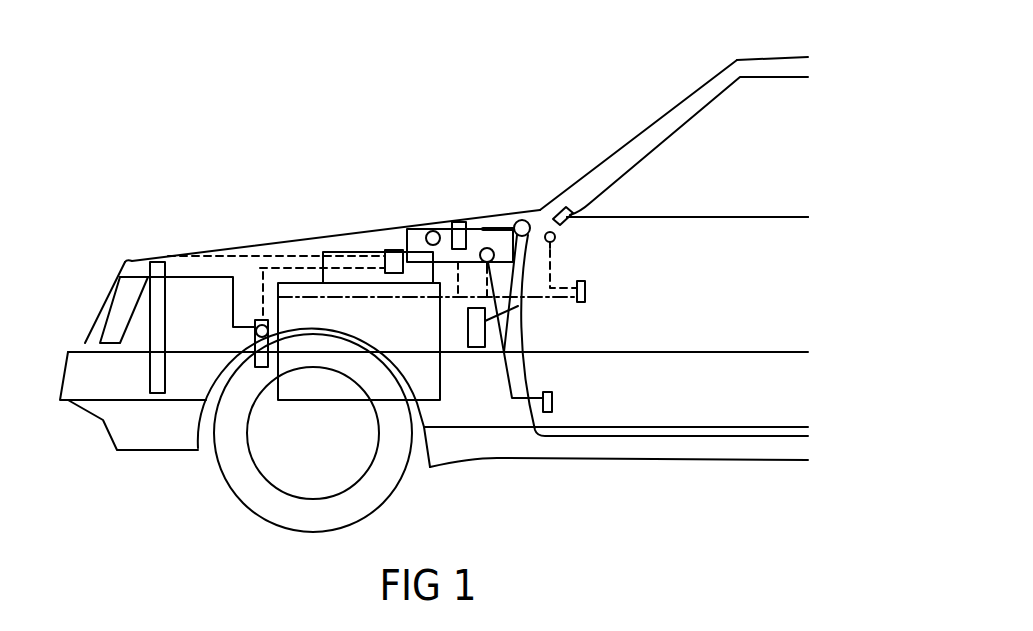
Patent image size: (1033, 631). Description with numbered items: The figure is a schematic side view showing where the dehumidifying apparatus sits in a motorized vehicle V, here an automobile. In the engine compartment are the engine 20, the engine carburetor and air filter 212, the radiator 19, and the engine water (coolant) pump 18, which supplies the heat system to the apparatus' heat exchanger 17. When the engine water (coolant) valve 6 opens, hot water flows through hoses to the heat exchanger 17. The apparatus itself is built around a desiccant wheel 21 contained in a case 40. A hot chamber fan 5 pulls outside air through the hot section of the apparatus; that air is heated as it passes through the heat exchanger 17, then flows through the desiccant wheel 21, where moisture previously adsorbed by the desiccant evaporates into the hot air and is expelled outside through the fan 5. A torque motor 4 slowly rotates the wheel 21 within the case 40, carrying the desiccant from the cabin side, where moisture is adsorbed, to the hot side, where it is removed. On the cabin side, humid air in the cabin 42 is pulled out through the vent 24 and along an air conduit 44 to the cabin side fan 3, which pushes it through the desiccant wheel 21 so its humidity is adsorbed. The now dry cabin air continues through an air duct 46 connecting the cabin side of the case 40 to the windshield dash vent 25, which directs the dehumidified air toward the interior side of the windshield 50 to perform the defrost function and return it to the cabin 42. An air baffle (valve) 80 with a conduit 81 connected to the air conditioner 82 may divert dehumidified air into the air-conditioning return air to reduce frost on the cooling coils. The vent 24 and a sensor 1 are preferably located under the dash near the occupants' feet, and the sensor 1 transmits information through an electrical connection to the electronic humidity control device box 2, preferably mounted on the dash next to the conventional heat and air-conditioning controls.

The motorized vehicle V is at (763, 57).
The sensor 1 is at (556, 236).
The electronic humidity control device box 2 is at (586, 289).
The cabin side fan 3 is at (487, 227).
The torque motor 4 is at (460, 222).
The hot chamber fan 5 is at (433, 231).
The engine water (coolant) valve 6 is at (256, 320).
The heat exchanger 17 is at (392, 250).
The engine water (coolant) pump 18 is at (257, 367).
The radiator 19 is at (140, 263).
The engine 20 is at (288, 281).
The desiccant wheel 21 is at (478, 227).
The vent 24 is at (552, 402).
The windshield dash vent 25 is at (578, 207).
The case 40 is at (428, 189).
The cabin 42 is at (703, 179).
The air conduit 44 is at (507, 363).
The air duct 46 is at (533, 210).
The windshield 50 is at (690, 112).
The air baffle (valve) 80 is at (529, 240).
The conduit 81 is at (511, 314).
The air conditioner 82 is at (476, 347).
The engine carburetor and air filter 212 is at (337, 252).